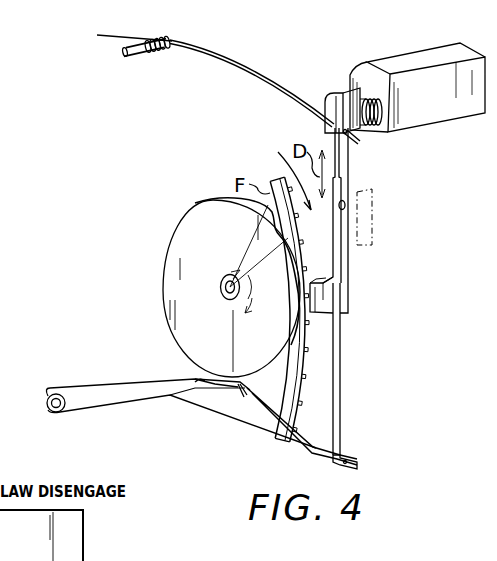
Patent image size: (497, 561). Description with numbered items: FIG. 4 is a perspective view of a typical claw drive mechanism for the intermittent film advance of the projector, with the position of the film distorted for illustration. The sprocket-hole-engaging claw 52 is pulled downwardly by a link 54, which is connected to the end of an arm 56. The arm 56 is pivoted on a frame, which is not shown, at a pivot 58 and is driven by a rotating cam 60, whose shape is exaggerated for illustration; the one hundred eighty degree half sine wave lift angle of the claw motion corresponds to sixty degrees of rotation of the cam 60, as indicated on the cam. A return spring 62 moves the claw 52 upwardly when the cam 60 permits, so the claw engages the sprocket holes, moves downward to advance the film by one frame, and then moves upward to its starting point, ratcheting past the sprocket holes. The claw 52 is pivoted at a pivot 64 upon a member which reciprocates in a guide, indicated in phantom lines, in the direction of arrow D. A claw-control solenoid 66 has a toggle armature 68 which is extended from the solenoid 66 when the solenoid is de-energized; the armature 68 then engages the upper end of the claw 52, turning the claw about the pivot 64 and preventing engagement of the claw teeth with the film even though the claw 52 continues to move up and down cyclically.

The claw 52 is at (348, 290).
The link 54 is at (340, 426).
The arm 56 is at (230, 402).
The pivot 58 is at (76, 372).
The rotating cam 60 is at (213, 300).
The return spring 62 is at (222, 51).
The pivot 64 is at (346, 203).
The claw-control solenoid 66 is at (421, 55).
The toggle armature 68 is at (334, 92).